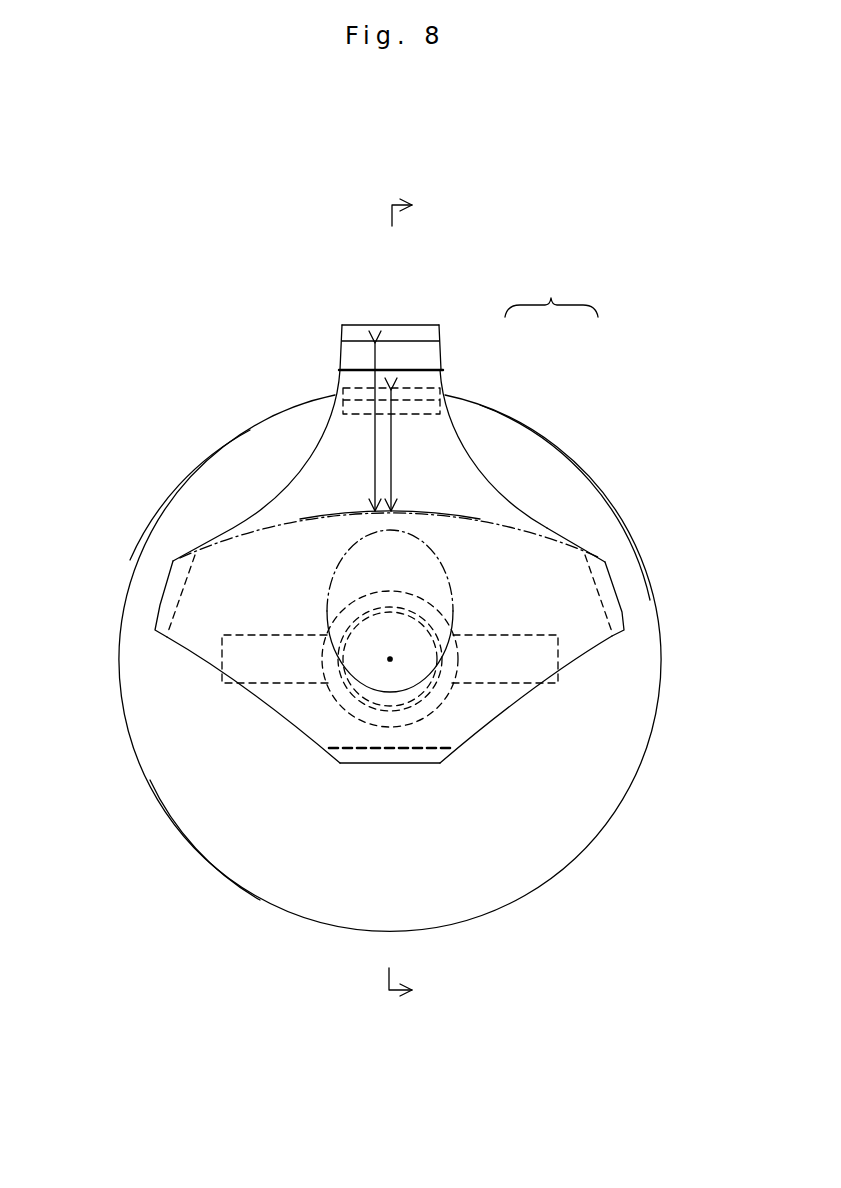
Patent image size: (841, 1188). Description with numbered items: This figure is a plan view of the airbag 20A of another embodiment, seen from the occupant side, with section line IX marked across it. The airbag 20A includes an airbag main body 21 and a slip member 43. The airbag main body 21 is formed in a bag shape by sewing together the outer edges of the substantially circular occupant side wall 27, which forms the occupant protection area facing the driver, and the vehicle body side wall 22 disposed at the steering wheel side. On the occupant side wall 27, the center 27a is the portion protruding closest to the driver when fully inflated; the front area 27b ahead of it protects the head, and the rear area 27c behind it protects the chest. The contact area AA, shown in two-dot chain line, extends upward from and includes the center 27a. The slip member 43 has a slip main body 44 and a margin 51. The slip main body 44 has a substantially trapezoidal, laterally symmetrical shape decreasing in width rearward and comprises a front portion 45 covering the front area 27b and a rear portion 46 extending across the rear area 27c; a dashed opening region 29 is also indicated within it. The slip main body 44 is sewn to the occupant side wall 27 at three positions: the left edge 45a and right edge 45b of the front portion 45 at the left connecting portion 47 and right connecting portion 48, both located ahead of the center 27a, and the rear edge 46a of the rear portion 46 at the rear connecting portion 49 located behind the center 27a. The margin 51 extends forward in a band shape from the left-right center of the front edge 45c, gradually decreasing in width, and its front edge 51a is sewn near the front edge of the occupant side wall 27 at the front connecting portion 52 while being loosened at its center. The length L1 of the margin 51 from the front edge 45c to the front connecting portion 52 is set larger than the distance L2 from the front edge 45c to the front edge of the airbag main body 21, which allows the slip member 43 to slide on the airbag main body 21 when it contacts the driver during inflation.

The airbag 20A is at (551, 295).
The airbag main body 21 is at (550, 429).
The vehicle body side wall 22 is at (585, 805).
The occupant side wall 27 is at (637, 528).
The center 27a is at (390, 662).
The front area 27b is at (200, 488).
The rear area 27c is at (190, 813).
The opening 29 is at (486, 690).
The slip member 43 is at (475, 426).
The slip main body 44 is at (279, 719).
The front portion 45 is at (495, 540).
The left edge 45a is at (155, 612).
The right edge 45b is at (621, 612).
The front edge 45c is at (297, 521).
The rear portion 46 is at (453, 733).
The rear edge 46a is at (391, 765).
The left connecting portion 47 is at (174, 589).
The right connecting portion 48 is at (605, 597).
The rear connecting portion 49 is at (428, 752).
The margin 51 is at (311, 445).
The front edge 51a is at (426, 327).
The front connecting portion 52 is at (359, 340).
The contact area AA is at (327, 590).
The length L1 is at (358, 427).
The distance L2 is at (408, 450).
The section line IX is at (418, 603).